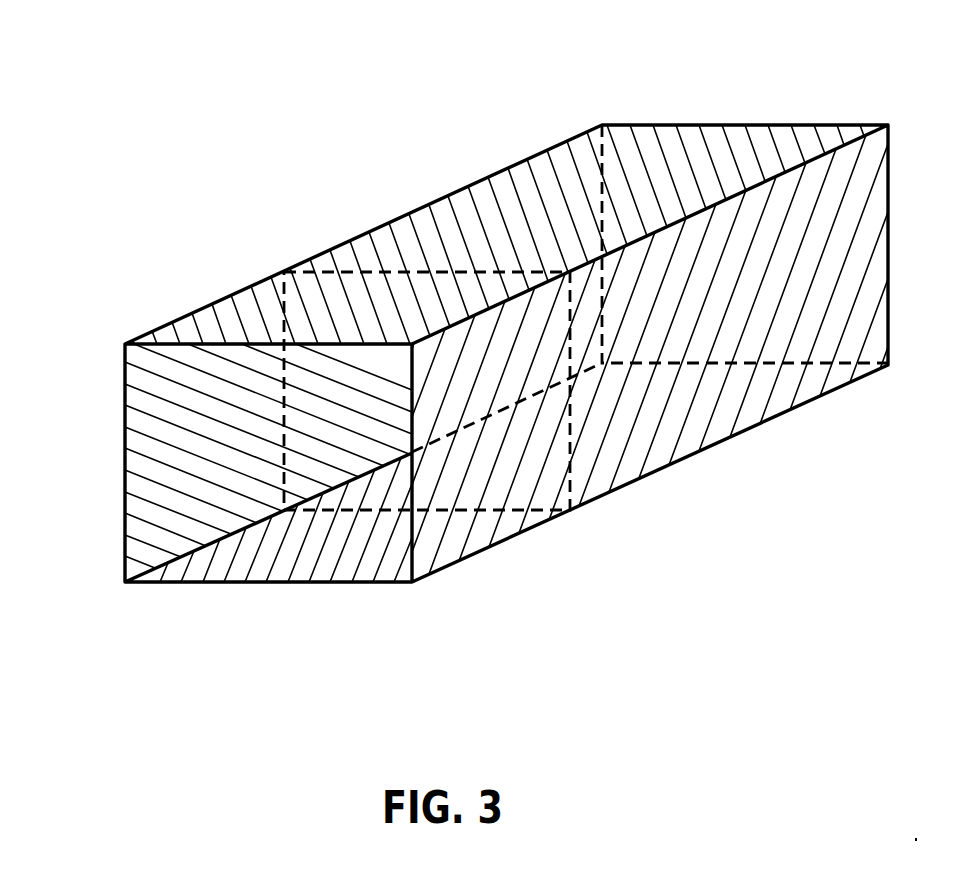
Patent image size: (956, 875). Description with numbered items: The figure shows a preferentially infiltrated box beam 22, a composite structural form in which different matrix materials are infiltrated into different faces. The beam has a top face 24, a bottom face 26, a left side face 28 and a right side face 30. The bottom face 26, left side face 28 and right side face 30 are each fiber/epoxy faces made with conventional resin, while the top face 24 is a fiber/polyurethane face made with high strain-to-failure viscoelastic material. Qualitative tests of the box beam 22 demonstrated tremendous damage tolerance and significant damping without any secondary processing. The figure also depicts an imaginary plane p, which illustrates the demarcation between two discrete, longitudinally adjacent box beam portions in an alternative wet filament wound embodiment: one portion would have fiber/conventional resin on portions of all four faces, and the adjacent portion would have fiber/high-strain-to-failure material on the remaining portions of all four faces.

The preferentially infiltrated box beam 22 is at (292, 156).
The top face 24 is at (517, 218).
The bottom face 26 is at (328, 535).
The left side face 28 is at (193, 472).
The right side face 30 is at (685, 390).
The imaginary plane p is at (488, 445).